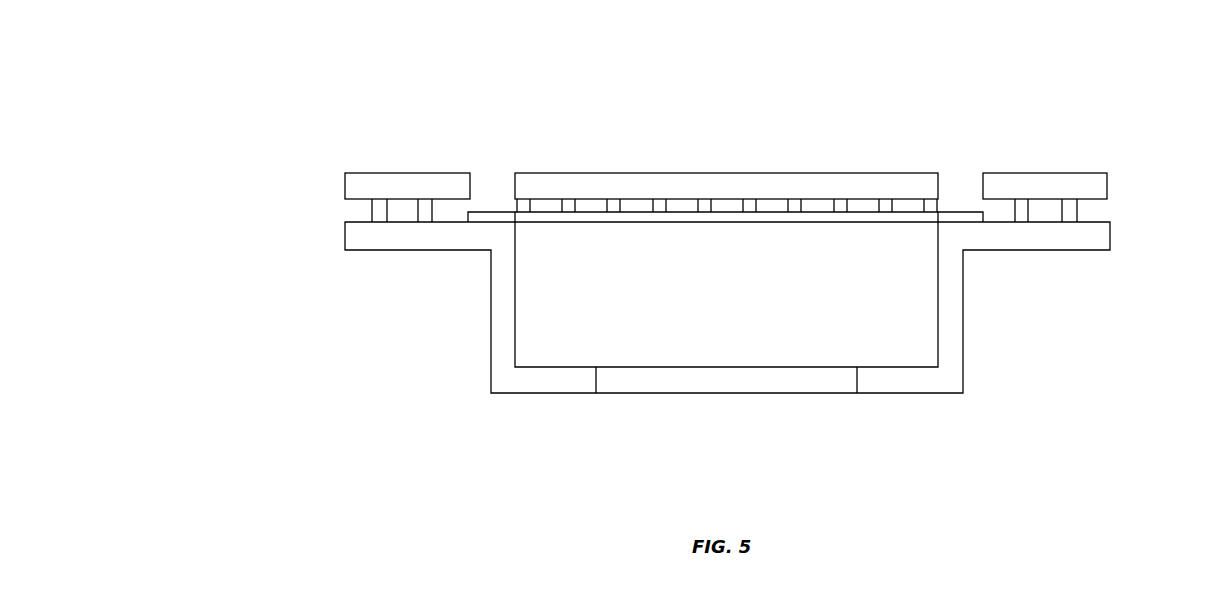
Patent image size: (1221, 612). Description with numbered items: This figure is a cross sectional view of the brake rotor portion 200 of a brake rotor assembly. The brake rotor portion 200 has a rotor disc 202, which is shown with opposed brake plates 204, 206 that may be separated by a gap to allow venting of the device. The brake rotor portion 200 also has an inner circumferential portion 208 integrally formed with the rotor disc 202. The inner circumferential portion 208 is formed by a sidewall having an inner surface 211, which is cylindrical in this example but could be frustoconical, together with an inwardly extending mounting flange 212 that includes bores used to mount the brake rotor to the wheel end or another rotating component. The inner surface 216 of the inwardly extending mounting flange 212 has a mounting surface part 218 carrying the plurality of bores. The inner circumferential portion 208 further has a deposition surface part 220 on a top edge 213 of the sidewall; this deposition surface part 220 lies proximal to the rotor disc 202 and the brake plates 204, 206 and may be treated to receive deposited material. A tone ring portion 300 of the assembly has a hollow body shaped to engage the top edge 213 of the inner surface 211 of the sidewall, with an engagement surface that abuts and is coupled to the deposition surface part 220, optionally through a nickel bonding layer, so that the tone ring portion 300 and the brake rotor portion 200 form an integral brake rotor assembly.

The brake rotor portion 200 is at (300, 112).
The rotor disc 202 is at (1115, 173).
The brake plate 204 is at (360, 177).
The brake plate 206 is at (1077, 245).
The inner circumferential portion 208 is at (952, 333).
The inner surface 211 is at (742, 304).
The mounting flange 212 is at (902, 382).
The top edge 213 is at (931, 232).
The inner surface 216 is at (535, 367).
The mounting surface part 218 is at (567, 382).
The deposition surface part 220 is at (485, 201).
The tone ring portion 300 is at (505, 217).